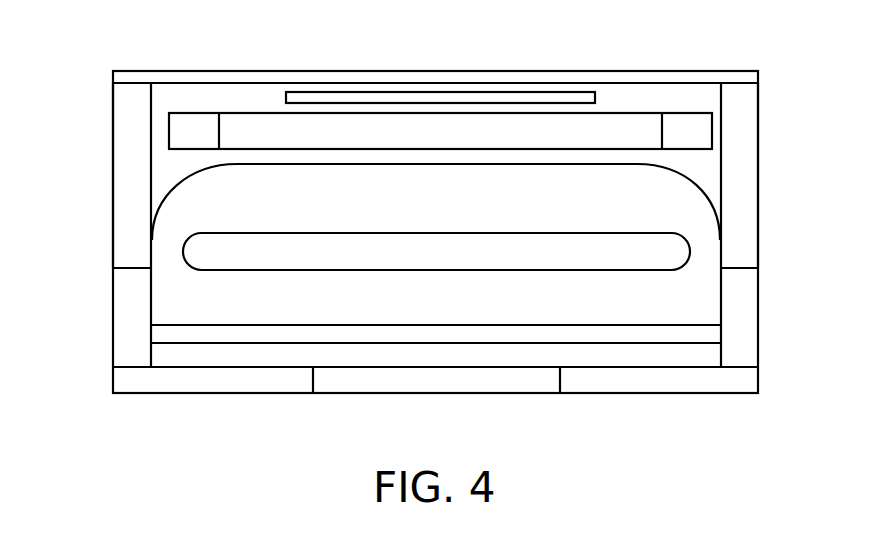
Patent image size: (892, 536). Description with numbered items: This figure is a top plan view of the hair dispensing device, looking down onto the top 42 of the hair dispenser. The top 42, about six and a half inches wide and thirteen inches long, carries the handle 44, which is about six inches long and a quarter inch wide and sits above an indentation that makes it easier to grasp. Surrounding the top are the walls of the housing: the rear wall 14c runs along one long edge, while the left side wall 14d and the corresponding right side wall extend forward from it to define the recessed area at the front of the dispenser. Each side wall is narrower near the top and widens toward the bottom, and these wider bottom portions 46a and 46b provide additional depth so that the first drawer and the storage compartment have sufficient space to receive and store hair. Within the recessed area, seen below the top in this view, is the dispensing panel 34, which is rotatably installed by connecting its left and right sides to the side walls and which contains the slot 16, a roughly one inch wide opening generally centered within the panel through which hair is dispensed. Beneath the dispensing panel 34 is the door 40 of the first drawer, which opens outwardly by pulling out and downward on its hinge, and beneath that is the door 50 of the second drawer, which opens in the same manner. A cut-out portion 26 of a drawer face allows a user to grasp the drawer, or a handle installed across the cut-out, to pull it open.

The rear wall 14c is at (473, 71).
The left side wall 14d is at (113, 303).
The wider bottom portion of left side wall 46a is at (758, 128).
The wider bottom portion of right side wall 46b is at (113, 163).
The handle 44 is at (246, 123).
The top 42 is at (654, 96).
The slot 16 is at (681, 253).
The dispensing panel 34 is at (707, 302).
The cut-out portion 26 is at (466, 383).
The door 40 is at (618, 358).
The door 50 is at (193, 393).